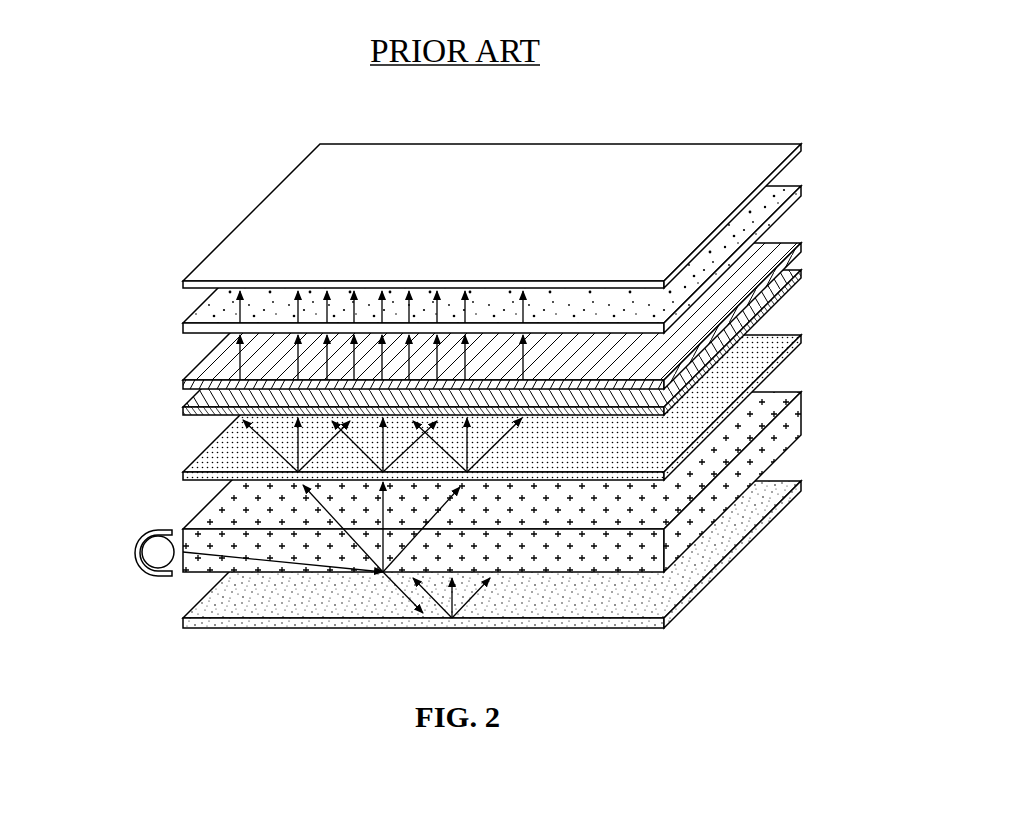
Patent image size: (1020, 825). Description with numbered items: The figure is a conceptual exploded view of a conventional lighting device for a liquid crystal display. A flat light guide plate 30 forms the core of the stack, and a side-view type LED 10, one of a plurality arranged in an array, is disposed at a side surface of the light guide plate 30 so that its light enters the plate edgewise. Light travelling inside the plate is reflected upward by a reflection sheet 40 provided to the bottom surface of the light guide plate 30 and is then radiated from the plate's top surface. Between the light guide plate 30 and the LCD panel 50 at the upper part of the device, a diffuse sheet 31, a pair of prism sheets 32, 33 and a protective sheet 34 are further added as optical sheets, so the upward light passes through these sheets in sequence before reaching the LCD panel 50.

The side-view type LED 10 is at (132, 551).
The light guide plate 30 is at (802, 415).
The diffuse sheet 31 is at (801, 335).
The prism sheet 32 is at (801, 270).
The prism sheet 33 is at (801, 245).
The protective sheet 34 is at (801, 187).
The reflection sheet 40 is at (790, 502).
The LCD panel 50 is at (801, 145).